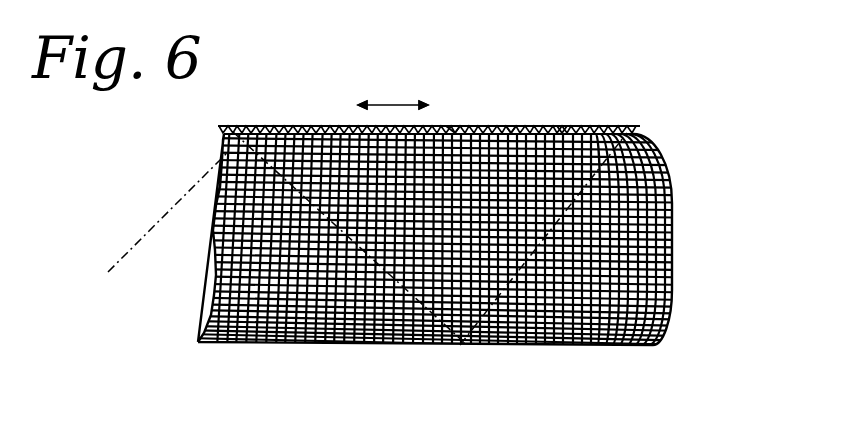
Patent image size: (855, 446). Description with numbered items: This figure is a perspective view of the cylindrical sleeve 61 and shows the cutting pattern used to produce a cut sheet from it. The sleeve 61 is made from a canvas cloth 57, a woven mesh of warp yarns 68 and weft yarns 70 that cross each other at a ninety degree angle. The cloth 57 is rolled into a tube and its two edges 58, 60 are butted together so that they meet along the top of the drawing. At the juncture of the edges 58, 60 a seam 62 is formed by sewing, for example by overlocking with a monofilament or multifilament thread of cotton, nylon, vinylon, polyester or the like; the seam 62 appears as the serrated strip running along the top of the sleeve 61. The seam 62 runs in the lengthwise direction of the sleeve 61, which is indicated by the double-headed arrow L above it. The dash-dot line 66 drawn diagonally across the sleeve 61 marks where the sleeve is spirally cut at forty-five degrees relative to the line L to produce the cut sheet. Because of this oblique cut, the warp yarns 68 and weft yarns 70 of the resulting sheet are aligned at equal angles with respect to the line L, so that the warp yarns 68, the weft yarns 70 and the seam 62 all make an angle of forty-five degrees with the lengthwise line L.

The canvas cloth 57 is at (653, 242).
The edge 58 is at (452, 130).
The edge 60 is at (563, 130).
The cylindrical sleeve 61 is at (653, 208).
The seam 62 is at (315, 130).
The cutting line 66 is at (207, 172).
The warp yarns 68 is at (515, 130).
The weft yarns 70 is at (628, 131).
The lengthwise direction line L is at (400, 105).